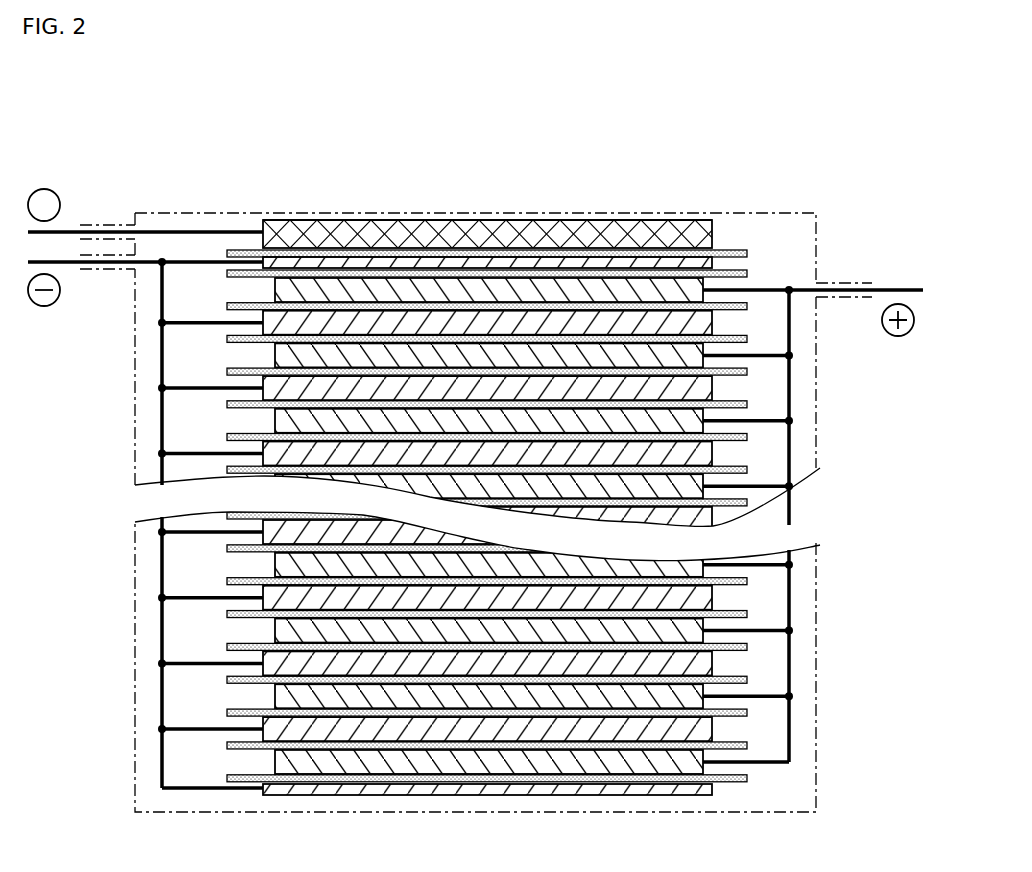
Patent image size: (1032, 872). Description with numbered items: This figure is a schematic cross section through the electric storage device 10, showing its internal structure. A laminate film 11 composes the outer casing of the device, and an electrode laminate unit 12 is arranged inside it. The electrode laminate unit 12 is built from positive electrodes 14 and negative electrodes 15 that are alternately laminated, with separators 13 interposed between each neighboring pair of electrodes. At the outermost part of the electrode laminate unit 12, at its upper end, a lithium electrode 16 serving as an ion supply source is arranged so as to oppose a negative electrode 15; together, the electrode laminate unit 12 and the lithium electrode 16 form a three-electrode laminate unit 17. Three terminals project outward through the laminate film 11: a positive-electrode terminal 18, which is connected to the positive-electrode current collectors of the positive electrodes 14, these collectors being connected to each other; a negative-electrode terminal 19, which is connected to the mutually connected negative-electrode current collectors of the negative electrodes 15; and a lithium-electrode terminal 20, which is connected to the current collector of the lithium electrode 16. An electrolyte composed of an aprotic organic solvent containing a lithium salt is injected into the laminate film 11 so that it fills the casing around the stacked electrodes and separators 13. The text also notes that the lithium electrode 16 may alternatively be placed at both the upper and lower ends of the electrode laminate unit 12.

The electric storage device 10 is at (637, 146).
The laminate film 11 is at (818, 655).
The electrode laminate unit 12 is at (724, 240).
The separator 13 is at (747, 252).
The positive electrode 14 is at (278, 285).
The negative electrode 15 is at (698, 261).
The lithium electrode 16 is at (482, 237).
The three-electrode laminate unit 17 is at (538, 221).
The positive-electrode terminal 18 is at (897, 285).
The negative-electrode terminal 19 is at (77, 270).
The lithium-electrode terminal 20 is at (77, 224).